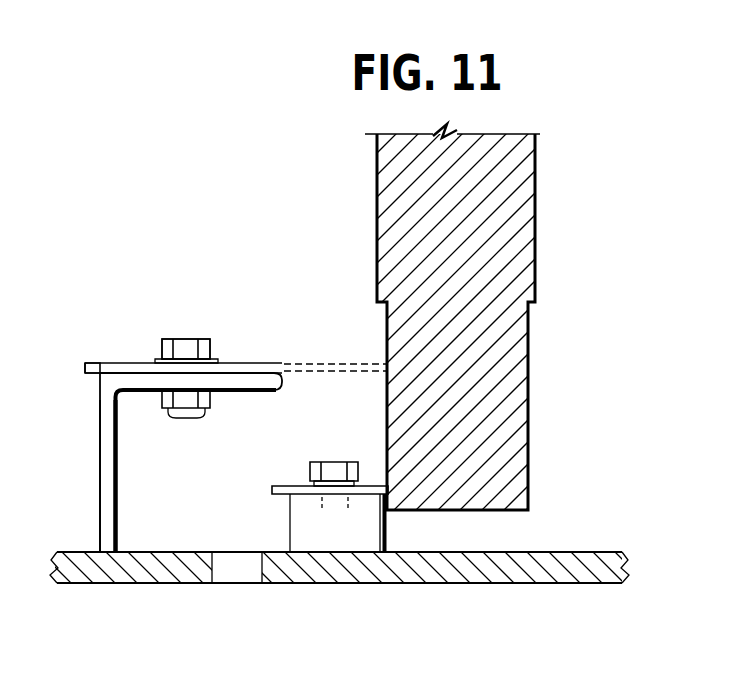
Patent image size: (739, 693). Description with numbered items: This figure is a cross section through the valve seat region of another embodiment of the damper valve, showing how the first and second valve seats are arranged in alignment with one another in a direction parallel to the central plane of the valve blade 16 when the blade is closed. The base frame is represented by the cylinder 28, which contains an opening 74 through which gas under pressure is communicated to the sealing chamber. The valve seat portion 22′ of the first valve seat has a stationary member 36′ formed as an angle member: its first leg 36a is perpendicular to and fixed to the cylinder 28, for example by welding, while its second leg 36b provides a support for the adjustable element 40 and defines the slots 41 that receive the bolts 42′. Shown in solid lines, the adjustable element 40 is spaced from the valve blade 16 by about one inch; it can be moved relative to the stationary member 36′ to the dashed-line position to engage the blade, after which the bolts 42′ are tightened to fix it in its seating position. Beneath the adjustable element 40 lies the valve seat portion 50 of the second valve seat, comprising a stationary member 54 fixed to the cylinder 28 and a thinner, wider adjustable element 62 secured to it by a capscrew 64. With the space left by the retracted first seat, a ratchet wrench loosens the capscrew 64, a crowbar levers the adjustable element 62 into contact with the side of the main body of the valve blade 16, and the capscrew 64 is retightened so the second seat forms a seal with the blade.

The valve blade 16 is at (525, 276).
The valve seat portion 22′ is at (186, 339).
The cylinder 28 is at (622, 568).
The stationary member 36′ is at (99, 497).
The first leg 36a is at (100, 450).
The second leg 36b is at (232, 381).
The adjustable element 40 is at (116, 363).
The slots 41 is at (85, 362).
The bolts 42′ is at (206, 338).
The valve seat portion 50 is at (388, 535).
The stationary member 54 is at (303, 545).
The adjustable element 62 is at (283, 486).
The capscrew 64 is at (338, 462).
The opening 74 is at (213, 572).